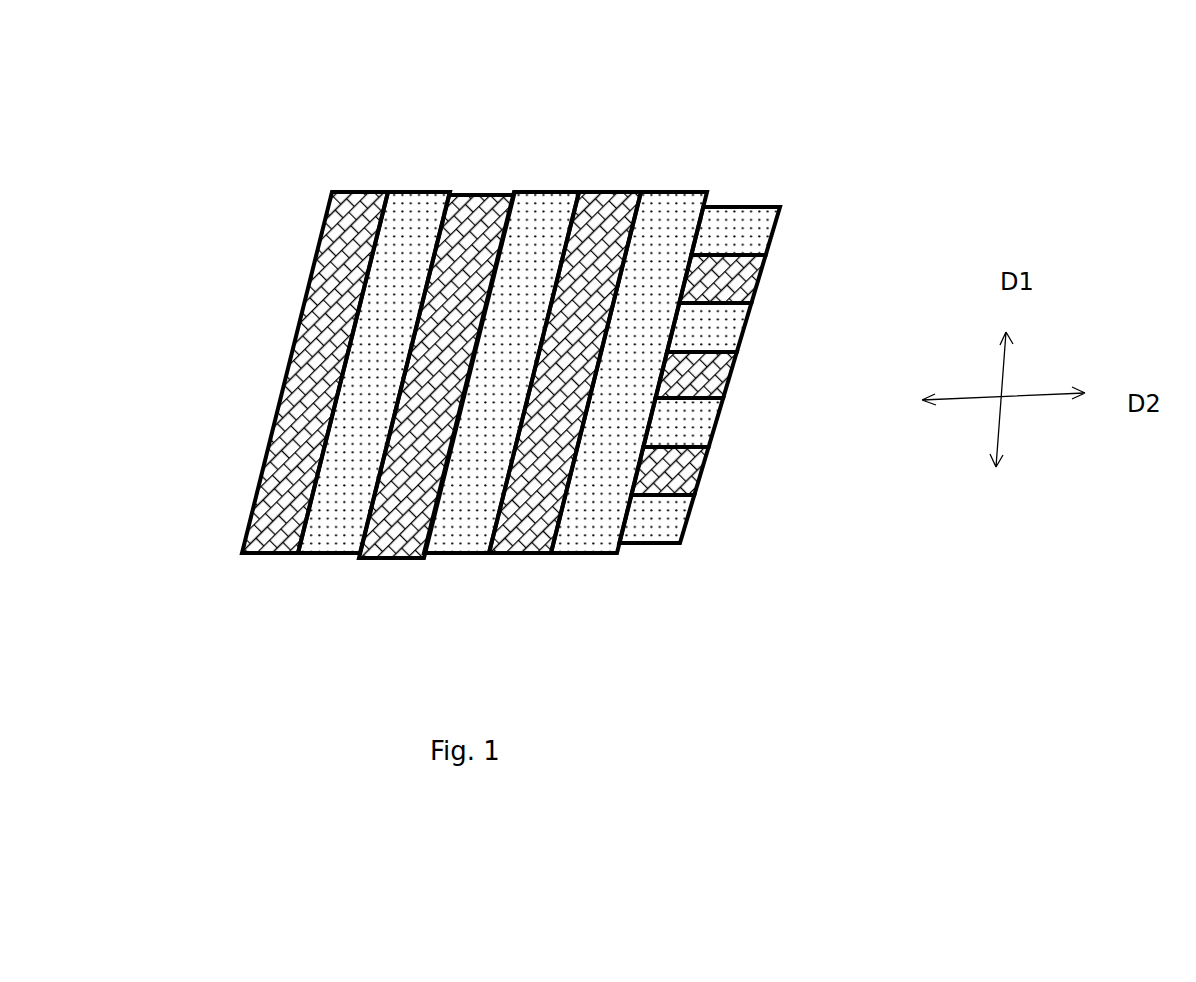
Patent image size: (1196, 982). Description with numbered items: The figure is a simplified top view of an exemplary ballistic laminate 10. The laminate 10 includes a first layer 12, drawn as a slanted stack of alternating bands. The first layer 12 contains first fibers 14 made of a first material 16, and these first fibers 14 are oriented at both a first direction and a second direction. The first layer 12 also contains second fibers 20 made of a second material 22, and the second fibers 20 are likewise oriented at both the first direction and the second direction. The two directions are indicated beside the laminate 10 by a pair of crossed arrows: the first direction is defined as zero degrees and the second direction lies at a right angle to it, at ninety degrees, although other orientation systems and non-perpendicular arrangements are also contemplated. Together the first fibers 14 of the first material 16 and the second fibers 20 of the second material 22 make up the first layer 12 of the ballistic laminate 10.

The ballistic laminate 10 is at (300, 196).
The first layer 12 is at (707, 205).
The first fibers 14 is at (412, 210).
The first material 16 is at (407, 308).
The second fibers 20 is at (495, 214).
The second material 22 is at (477, 308).